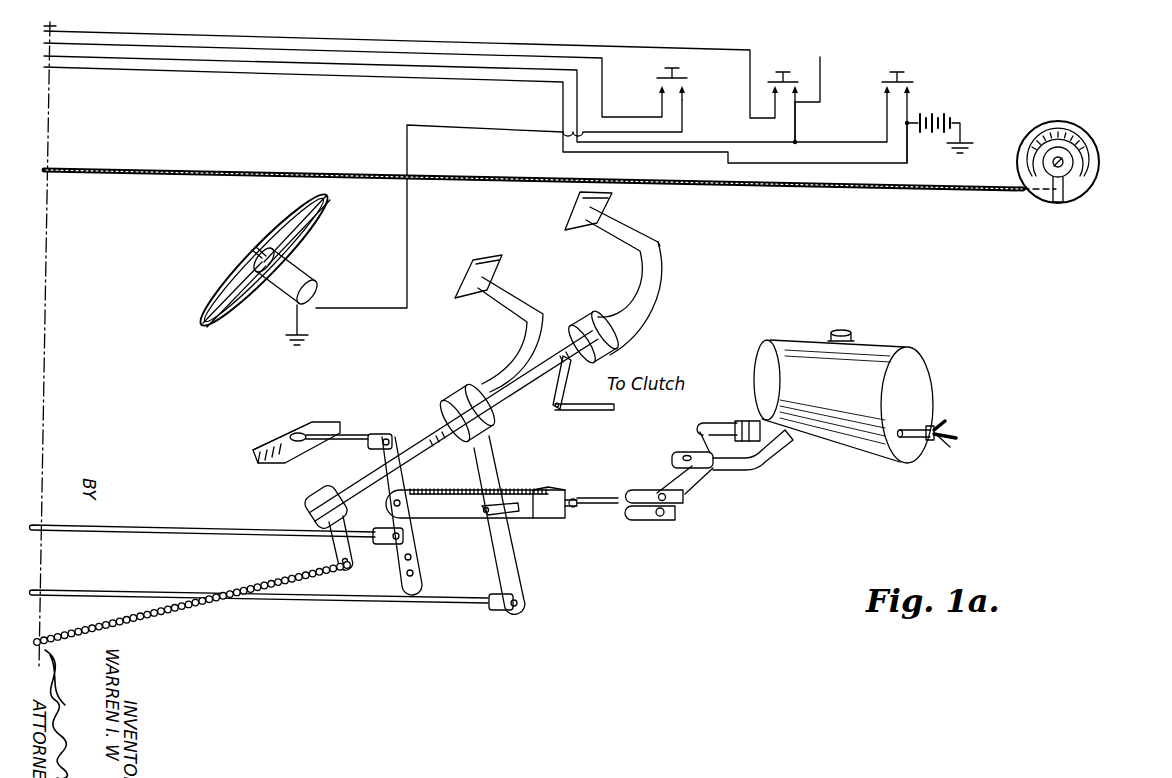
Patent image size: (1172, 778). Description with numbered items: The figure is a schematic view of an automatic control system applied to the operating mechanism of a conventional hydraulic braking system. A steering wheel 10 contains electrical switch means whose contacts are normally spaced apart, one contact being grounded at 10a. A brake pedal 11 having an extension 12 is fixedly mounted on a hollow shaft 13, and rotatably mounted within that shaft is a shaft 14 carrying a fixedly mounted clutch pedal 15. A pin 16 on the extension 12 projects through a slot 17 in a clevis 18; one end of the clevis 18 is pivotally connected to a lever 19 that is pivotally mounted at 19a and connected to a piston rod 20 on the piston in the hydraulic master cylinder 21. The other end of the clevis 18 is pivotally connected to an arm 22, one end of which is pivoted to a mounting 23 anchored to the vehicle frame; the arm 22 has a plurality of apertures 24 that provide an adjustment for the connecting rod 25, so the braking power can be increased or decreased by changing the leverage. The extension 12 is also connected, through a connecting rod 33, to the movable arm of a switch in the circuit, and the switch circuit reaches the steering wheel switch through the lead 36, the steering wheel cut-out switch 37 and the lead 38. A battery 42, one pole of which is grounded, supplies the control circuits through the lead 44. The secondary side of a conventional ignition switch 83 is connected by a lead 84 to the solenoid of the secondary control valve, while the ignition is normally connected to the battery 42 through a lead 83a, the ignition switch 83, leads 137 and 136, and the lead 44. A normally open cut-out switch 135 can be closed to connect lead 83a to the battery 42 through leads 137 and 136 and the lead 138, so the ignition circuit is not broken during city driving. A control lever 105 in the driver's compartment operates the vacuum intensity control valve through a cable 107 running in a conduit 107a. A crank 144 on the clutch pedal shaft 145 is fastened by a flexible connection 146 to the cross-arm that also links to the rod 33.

The steering wheel 10 is at (238, 250).
The ground 10a is at (306, 336).
The brake pedal 11 is at (513, 293).
The extension 12 is at (489, 462).
The hollow shaft 13 is at (539, 400).
The shaft 14 is at (418, 438).
The clutch pedal 15 is at (661, 250).
The pin 16 is at (486, 512).
The slot 17 is at (530, 514).
The clevis 18 is at (563, 490).
The lever 19 is at (679, 481).
The pivot 19a is at (683, 455).
The piston rod 20 is at (713, 423).
The hydraulic master cylinder 21 is at (910, 348).
The arm 22 is at (380, 462).
The mounting 23 is at (330, 433).
The apertures 24 is at (412, 558).
The connecting rod 25 is at (131, 526).
The connecting rod 33 is at (123, 592).
The lead 36 is at (88, 46).
The steering wheel cut-out switch 37 is at (665, 78).
The lead 38 is at (451, 126).
The battery 42 is at (952, 118).
The lead 44 is at (167, 72).
The ignition switch 83 is at (784, 72).
The lead 83a is at (822, 70).
The lead 84 is at (130, 33).
The control lever 105 is at (1063, 178).
The cable 107 is at (1028, 195).
The conduit 107a is at (207, 171).
The cut-out switch 135 is at (910, 74).
The lead 136 is at (223, 60).
The lead 137 is at (794, 130).
The lead 138 is at (910, 108).
The crank 144 is at (338, 549).
The clutch pedal shaft 145 is at (312, 508).
The flexible connection 146 is at (161, 616).